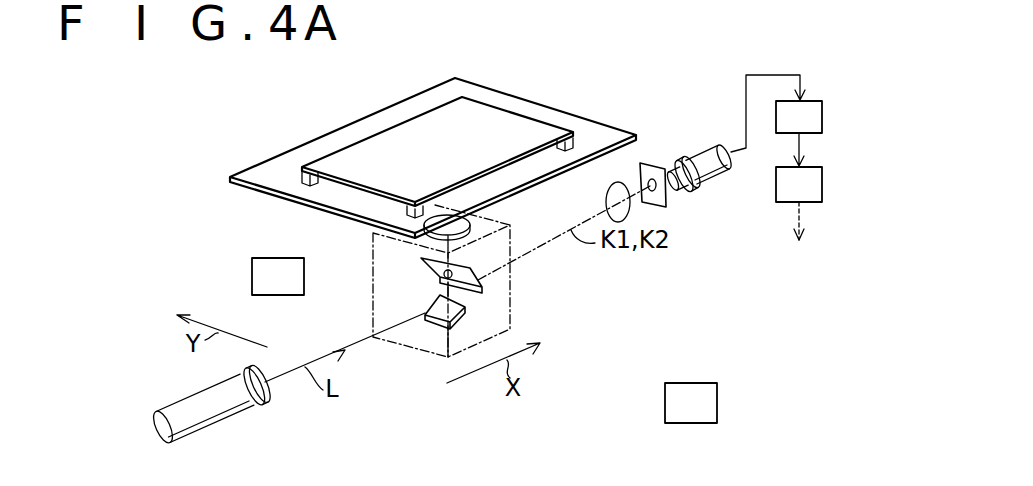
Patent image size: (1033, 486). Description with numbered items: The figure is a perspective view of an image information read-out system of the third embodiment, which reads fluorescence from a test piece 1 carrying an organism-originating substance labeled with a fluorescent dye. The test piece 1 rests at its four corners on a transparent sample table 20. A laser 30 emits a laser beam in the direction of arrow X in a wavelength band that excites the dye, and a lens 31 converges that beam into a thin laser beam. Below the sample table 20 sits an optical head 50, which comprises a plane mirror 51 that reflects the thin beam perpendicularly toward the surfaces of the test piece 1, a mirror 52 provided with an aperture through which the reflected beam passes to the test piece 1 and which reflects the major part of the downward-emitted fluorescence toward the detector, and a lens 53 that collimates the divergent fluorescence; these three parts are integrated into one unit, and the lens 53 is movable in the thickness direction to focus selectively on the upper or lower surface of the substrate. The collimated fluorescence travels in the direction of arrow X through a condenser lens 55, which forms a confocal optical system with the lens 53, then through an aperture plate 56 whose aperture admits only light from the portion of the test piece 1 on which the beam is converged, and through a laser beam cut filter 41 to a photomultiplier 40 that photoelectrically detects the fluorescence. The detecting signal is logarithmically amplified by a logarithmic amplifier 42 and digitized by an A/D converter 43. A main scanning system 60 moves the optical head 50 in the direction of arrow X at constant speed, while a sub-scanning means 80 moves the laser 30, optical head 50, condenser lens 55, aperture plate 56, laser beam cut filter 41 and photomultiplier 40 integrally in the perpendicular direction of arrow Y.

The test piece 1 is at (510, 122).
The transparent sample table 20 is at (573, 119).
The laser 30 is at (225, 420).
The lens 31 is at (260, 400).
The photomultiplier 40 is at (697, 149).
The laser beam cut filter 41 is at (684, 189).
The logarithmic amplifier 42 is at (799, 117).
The A/D converter 43 is at (799, 186).
The optical head 50 is at (512, 322).
The plane mirror 51 is at (430, 328).
The mirror 52 is at (484, 279).
The lens 53 is at (470, 233).
The condenser lens 55 is at (608, 190).
The aperture plate 56 is at (648, 160).
The main scanning system 60 is at (372, 277).
The sub-scanning means 80 is at (691, 403).